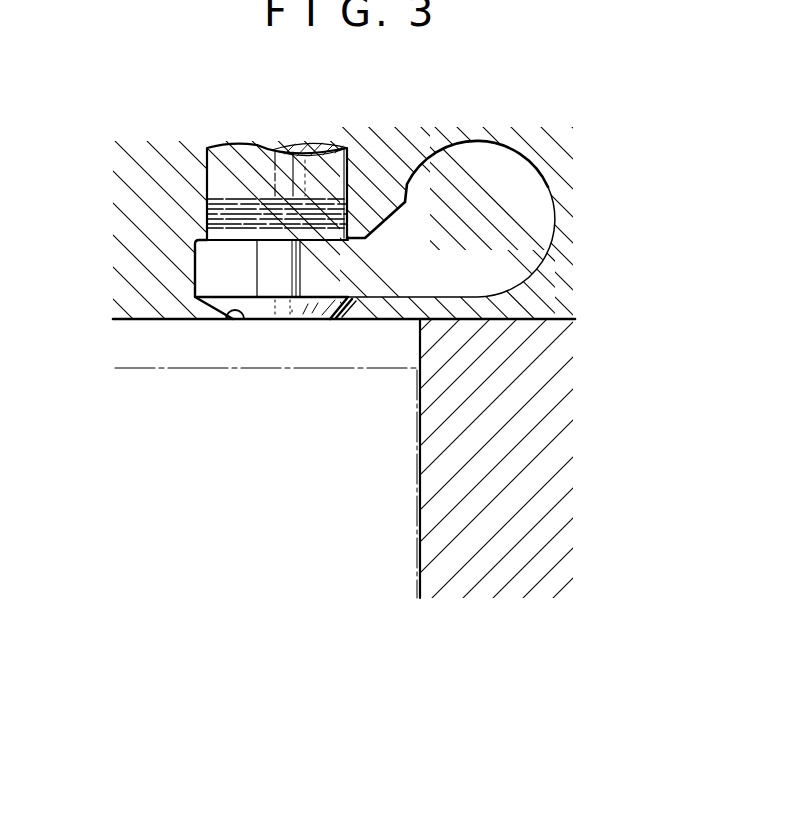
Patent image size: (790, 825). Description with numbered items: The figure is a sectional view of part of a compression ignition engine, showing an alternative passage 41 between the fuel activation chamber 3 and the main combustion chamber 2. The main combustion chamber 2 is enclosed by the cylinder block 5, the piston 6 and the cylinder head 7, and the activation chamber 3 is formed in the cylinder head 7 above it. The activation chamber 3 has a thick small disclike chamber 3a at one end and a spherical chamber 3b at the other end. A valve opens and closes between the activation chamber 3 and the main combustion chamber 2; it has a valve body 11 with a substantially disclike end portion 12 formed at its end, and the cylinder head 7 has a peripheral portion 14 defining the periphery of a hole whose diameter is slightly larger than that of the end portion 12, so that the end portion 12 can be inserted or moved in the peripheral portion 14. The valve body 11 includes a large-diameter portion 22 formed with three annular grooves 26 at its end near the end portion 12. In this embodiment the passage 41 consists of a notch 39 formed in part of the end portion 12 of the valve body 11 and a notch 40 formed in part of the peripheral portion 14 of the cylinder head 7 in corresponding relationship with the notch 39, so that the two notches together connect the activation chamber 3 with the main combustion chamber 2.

The main combustion chamber 2 is at (161, 349).
The fuel activation chamber 3 is at (358, 230).
The small disclike chamber 3a is at (200, 268).
The spherical chamber 3b is at (532, 217).
The cylinder block 5 is at (548, 425).
The piston 6 is at (130, 366).
The cylinder head 7 is at (498, 135).
The valve body 11 is at (299, 76).
The end portion 12 is at (271, 323).
The peripheral portion 14 is at (239, 323).
The large-diameter portion 22 is at (243, 153).
The annular grooves 26 is at (335, 148).
The notch 39 is at (331, 324).
The notch 40 is at (345, 326).
The passage 41 is at (343, 291).